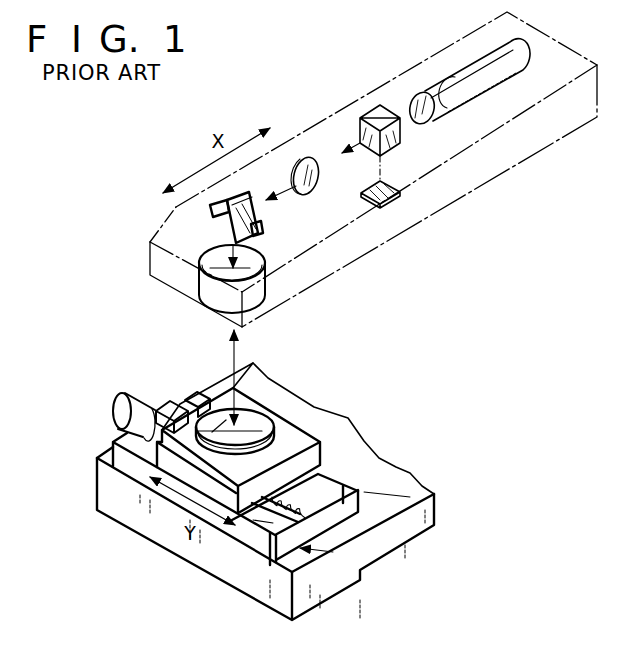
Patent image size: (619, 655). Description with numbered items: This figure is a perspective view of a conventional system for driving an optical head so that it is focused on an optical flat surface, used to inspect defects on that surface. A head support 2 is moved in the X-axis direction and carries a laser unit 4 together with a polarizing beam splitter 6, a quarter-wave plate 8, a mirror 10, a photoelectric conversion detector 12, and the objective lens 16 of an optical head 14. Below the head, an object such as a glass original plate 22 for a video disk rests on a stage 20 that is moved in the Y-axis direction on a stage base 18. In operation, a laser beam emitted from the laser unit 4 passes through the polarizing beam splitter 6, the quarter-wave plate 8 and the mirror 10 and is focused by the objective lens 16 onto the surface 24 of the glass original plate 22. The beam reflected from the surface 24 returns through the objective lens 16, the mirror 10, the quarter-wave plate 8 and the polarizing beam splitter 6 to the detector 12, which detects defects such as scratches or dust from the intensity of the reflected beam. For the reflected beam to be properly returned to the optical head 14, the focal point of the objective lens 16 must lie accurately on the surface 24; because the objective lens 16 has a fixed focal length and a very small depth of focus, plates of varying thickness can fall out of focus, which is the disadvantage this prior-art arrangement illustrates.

The head support 2 is at (393, 77).
The laser unit 4 is at (463, 64).
The polarizing beam splitter 6 is at (372, 108).
The quarter-wave plate 8 is at (306, 157).
The mirror 10 is at (257, 222).
The photoelectric conversion detector 12 is at (372, 188).
The optical head 14 is at (190, 242).
The objective lens 16 is at (262, 302).
The stage base 18 is at (268, 597).
The stage 20 is at (290, 428).
The glass original plate 22 is at (270, 418).
The surface 24 is at (223, 418).